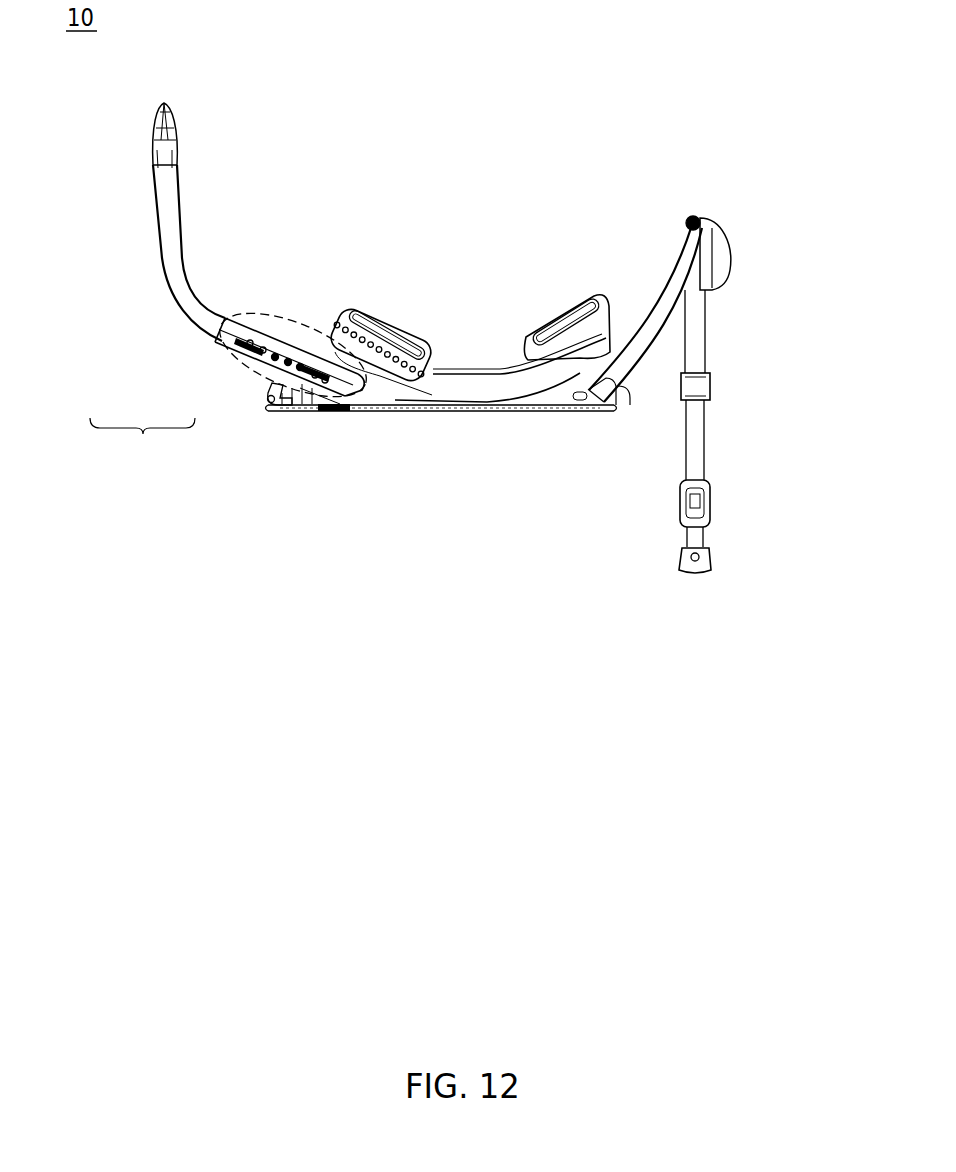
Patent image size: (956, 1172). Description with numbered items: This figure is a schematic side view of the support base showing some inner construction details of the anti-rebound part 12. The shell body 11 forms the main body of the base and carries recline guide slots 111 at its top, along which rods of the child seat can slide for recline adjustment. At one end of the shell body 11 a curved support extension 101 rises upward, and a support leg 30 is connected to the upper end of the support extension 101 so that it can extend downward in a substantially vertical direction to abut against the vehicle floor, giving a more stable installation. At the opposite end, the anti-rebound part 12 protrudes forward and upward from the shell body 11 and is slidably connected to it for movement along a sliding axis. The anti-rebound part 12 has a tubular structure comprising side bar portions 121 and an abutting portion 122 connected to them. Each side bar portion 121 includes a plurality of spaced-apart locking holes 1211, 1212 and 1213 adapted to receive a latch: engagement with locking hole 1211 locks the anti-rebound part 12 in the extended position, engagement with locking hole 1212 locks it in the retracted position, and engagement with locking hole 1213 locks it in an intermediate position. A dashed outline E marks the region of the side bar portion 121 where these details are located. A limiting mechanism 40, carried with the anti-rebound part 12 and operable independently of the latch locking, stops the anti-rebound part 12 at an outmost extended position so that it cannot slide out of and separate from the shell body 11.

The shell body 11 is at (513, 386).
The anti-rebound part 12 is at (142, 437).
The support leg 30 is at (695, 440).
The limiting mechanism 40 is at (273, 407).
The support extension 101 is at (677, 283).
The recline guide slots 111 is at (400, 338).
The side bar portions 121 is at (238, 336).
The abutting portion 122 is at (172, 238).
The locking hole 1211 is at (325, 409).
The locking hole 1212 is at (248, 330).
The locking hole 1213 is at (268, 340).
The enlarged region E is at (240, 374).